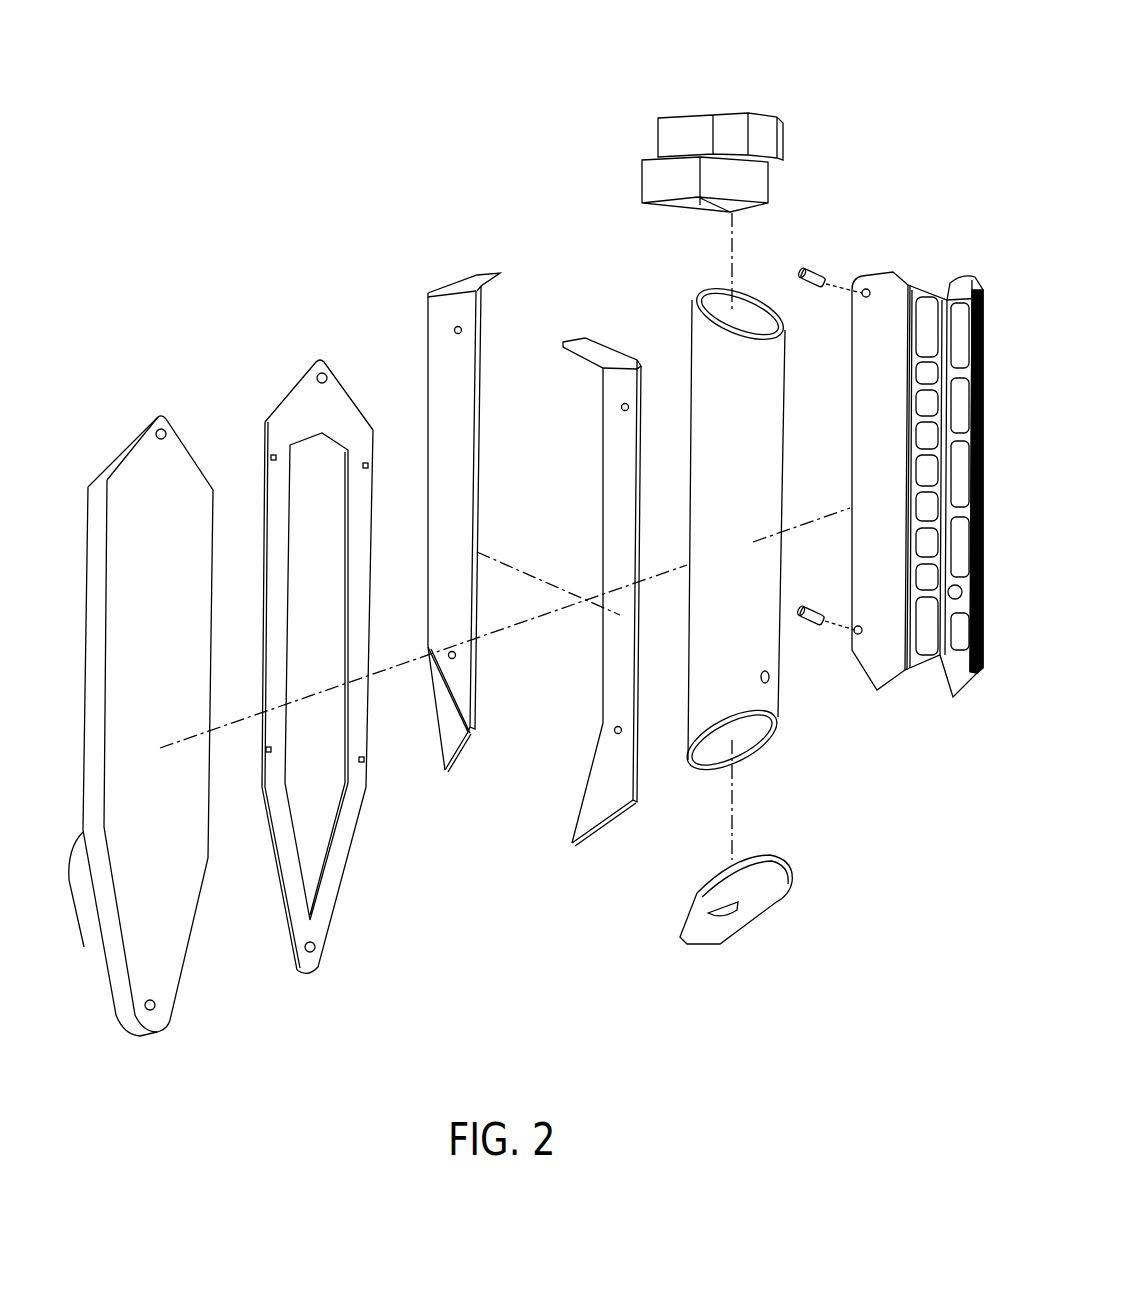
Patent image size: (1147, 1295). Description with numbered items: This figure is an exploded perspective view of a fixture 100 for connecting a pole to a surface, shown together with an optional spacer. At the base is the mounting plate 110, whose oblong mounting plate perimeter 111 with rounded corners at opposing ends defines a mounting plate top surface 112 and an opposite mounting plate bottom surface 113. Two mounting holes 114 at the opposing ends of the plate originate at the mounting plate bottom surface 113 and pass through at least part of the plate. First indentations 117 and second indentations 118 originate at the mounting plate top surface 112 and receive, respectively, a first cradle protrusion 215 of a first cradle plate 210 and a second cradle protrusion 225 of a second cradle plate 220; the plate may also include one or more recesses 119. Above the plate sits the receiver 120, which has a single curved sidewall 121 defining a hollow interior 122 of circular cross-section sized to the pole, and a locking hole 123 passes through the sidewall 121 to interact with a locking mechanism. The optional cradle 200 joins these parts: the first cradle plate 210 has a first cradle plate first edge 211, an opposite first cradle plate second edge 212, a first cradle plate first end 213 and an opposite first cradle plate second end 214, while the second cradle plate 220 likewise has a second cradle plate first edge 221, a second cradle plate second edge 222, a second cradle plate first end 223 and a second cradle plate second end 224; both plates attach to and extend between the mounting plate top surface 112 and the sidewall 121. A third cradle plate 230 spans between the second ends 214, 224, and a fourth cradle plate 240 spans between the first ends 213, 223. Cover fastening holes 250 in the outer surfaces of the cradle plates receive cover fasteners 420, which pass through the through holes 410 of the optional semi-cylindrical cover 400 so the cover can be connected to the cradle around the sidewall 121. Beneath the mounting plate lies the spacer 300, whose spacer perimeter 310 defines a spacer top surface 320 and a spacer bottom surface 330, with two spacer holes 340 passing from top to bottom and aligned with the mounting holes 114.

The fixture 100 is at (858, 987).
The mounting plate 110 is at (345, 930).
The mounting plate perimeter 111 is at (346, 898).
The mounting plate top surface 112 is at (348, 828).
The mounting plate bottom surface 113 is at (284, 900).
The mounting hole 114 is at (320, 374).
The first indentation 117 is at (272, 460).
The second indentation 118 is at (364, 467).
The recess 119 is at (332, 715).
The receiver 120 is at (745, 699).
The sidewall 121 is at (760, 757).
The hollow interior 122 is at (705, 745).
The locking hole 123 is at (772, 680).
The cradle 200 is at (742, 103).
The first cradle plate 210 is at (465, 757).
The first cradle plate first edge 211 is at (427, 470).
The first cradle plate second edge 212 is at (477, 470).
The first cradle plate first end 213 is at (467, 738).
The first cradle plate second end 214 is at (468, 272).
The first cradle protrusion 215 is at (428, 318).
The second cradle plate 220 is at (578, 752).
The second cradle plate first edge 221 is at (602, 500).
The second cradle plate second edge 222 is at (641, 468).
The second cradle plate first end 223 is at (605, 826).
The second cradle plate second end 224 is at (585, 340).
The second cradle protrusion 225 is at (603, 402).
The third cradle plate 230 is at (786, 140).
The fourth cradle plate 240 is at (750, 905).
The cover fastening hole 250 is at (462, 332).
The spacer 300 is at (172, 1022).
The spacer perimeter 310 is at (188, 952).
The spacer top surface 320 is at (185, 842).
The spacer bottom surface 330 is at (74, 875).
The spacer hole 340 is at (164, 430).
The cover 400 is at (933, 708).
The through hole 410 is at (860, 296).
The cover fastener 420 is at (818, 268).